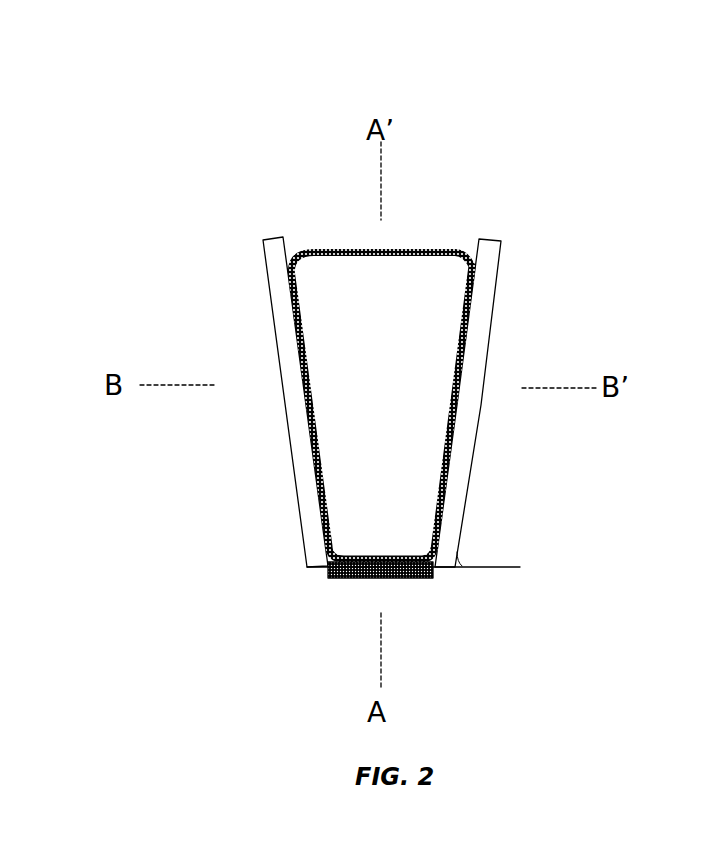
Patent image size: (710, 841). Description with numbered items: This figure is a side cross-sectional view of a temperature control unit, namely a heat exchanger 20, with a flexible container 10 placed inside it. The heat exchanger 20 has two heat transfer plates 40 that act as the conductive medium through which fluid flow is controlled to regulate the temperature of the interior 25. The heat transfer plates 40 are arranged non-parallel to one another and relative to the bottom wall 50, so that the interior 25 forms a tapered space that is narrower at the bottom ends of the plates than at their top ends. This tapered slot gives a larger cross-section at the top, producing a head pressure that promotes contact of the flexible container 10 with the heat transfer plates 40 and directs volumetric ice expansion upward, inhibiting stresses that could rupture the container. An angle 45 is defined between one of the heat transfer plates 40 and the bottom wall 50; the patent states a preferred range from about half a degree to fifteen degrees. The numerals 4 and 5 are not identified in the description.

The base 4 is at (382, 578).
The interior cavity 5 is at (330, 293).
The flexible container 10 is at (458, 250).
The heat exchanger 20 is at (268, 498).
The interior 25 is at (391, 221).
The heat transfer plates 40 is at (283, 403).
The angle 45 is at (458, 550).
The bottom wall 50 is at (412, 578).